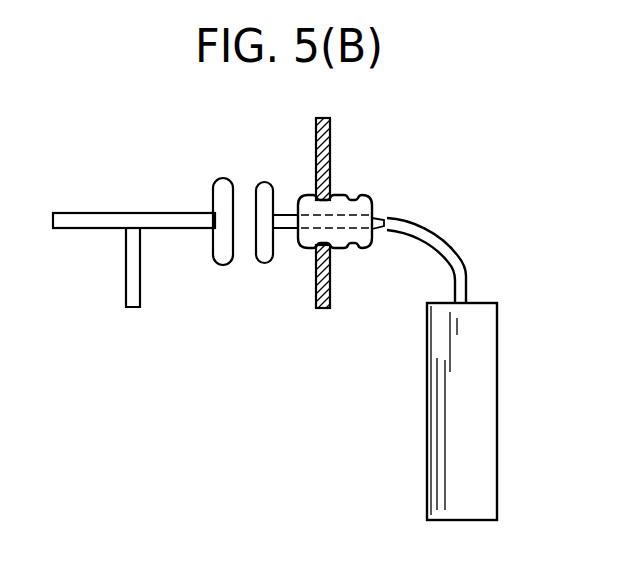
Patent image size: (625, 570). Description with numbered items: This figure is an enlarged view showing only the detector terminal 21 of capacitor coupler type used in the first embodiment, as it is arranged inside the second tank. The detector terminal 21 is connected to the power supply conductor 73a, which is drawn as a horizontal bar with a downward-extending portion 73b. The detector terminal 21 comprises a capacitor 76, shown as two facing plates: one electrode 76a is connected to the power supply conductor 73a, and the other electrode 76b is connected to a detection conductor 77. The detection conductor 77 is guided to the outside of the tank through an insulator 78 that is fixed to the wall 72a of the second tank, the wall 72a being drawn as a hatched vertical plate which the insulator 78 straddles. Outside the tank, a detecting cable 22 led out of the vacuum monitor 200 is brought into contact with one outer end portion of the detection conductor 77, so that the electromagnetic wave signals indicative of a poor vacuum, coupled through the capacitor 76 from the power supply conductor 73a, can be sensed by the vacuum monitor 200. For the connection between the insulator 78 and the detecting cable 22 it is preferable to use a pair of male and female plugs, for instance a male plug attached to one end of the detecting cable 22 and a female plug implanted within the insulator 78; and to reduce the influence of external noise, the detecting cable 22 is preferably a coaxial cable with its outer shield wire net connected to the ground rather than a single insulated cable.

The detector terminal 21 is at (189, 124).
The detecting cable 22 is at (447, 240).
The wall 72a is at (331, 123).
The power supply conductor 73a is at (95, 222).
The lever stem 73b is at (132, 286).
The capacitor 76 is at (246, 182).
The electrode 76a is at (218, 183).
The electrode 76b is at (283, 168).
The detection conductor 77 is at (381, 229).
The insulator 78 is at (345, 199).
The vacuum monitor 200 is at (497, 344).